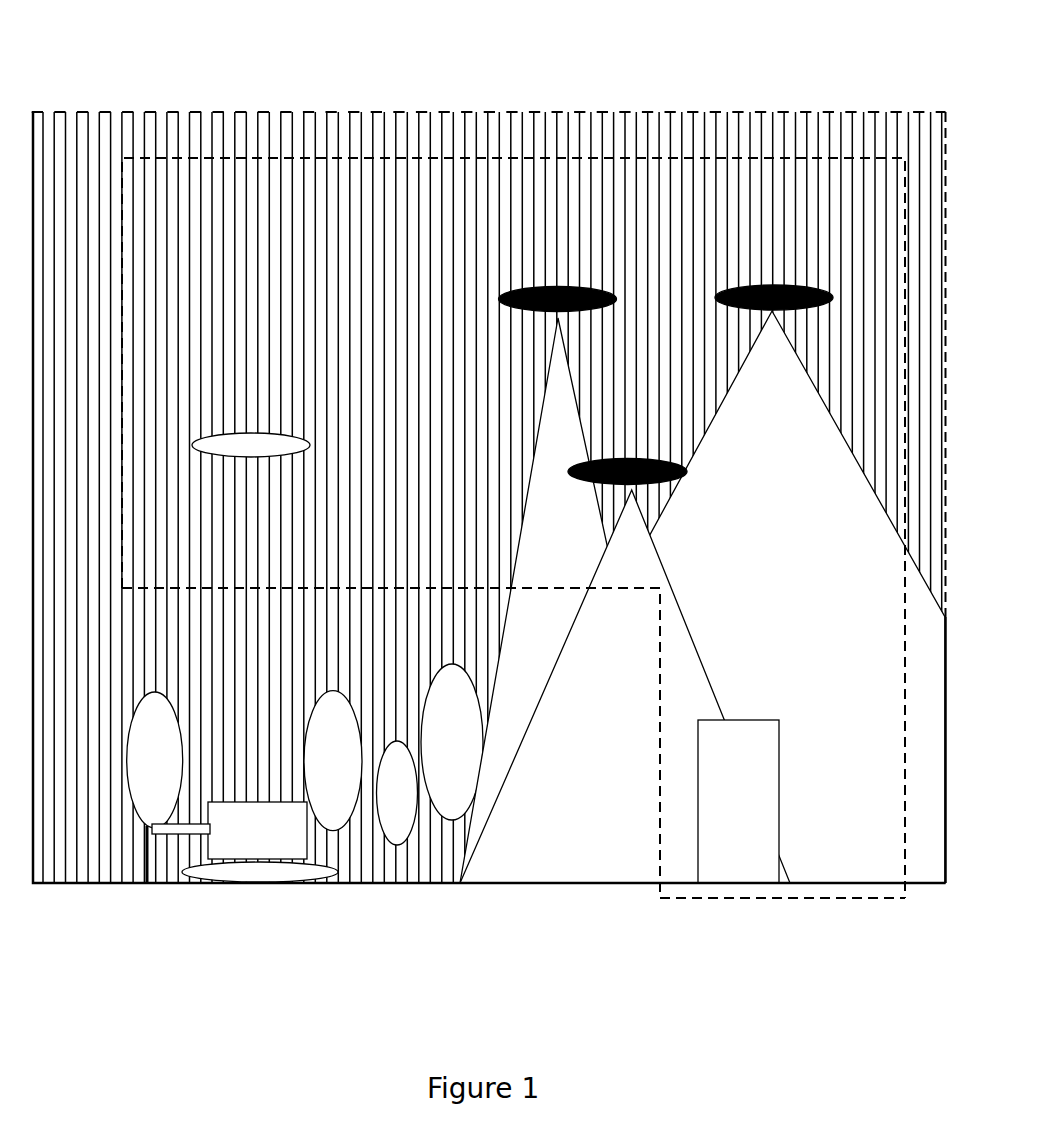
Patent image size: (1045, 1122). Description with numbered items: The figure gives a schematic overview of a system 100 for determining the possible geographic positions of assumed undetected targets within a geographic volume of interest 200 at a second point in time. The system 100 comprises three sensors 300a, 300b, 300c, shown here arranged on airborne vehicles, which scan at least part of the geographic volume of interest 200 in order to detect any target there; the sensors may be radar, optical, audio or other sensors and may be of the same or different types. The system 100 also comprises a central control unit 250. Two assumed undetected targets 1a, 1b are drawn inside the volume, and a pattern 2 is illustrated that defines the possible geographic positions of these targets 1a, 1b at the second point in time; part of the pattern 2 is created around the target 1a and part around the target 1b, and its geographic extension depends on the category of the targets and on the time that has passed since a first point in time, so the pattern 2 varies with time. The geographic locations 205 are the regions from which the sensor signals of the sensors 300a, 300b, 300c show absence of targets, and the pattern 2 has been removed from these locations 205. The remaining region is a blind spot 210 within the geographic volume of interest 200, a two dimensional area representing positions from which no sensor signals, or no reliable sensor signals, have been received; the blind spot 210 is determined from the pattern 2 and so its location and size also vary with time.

The pattern 2 is at (608, 100).
The geographic volume of interest 200 is at (466, 100).
The system 100 is at (218, 146).
The geographic locations 205 is at (582, 571).
The blind spot 210 is at (34, 921).
The central control unit 250 is at (756, 813).
The sensor 300a is at (561, 258).
The sensor 300b is at (631, 425).
The sensor 300c is at (774, 250).
The assumed undetected target 1a is at (270, 841).
The assumed undetected target 1b is at (251, 445).